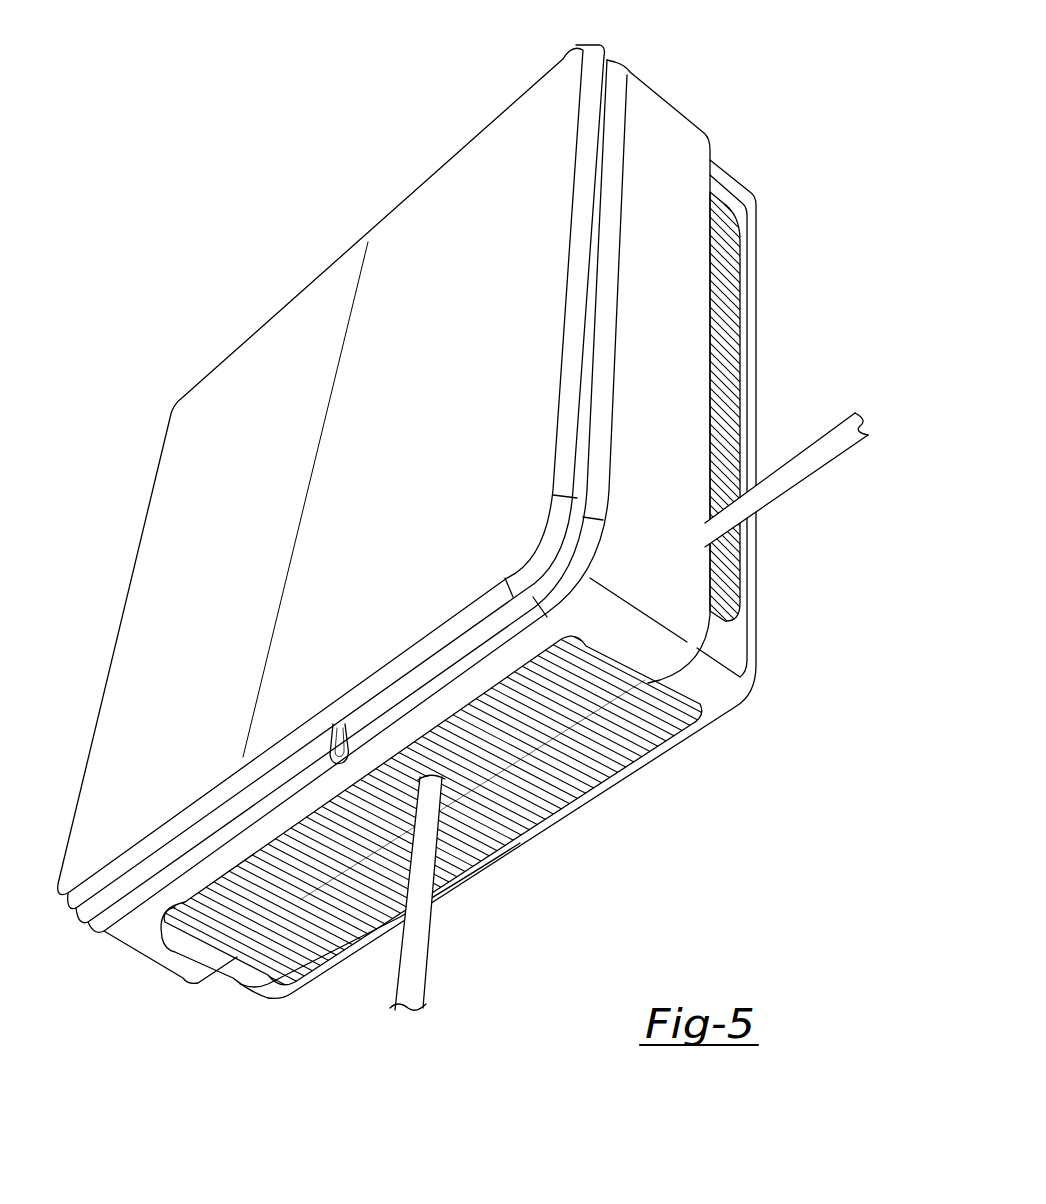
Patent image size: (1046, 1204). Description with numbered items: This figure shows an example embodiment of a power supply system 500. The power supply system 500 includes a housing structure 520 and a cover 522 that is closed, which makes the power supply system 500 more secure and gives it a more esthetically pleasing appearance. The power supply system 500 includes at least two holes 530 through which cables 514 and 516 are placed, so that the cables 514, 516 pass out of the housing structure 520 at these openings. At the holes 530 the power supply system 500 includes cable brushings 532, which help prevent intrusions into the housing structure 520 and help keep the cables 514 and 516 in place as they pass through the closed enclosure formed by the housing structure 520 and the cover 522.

The power supply system 500 is at (283, 126).
The cable 514 is at (806, 457).
The cable 516 is at (415, 942).
The housing structure 520 is at (672, 145).
The cover 522 is at (183, 563).
The holes 530 is at (718, 607).
The cable brushings 532 is at (725, 232).